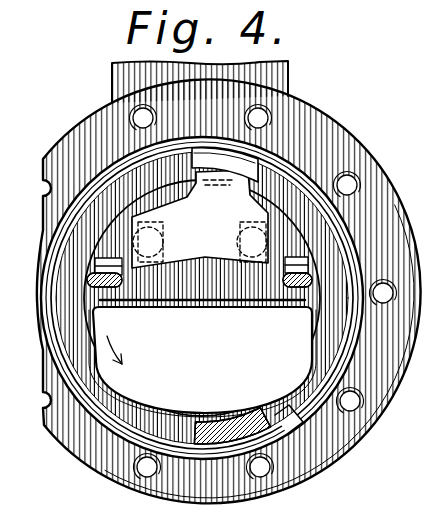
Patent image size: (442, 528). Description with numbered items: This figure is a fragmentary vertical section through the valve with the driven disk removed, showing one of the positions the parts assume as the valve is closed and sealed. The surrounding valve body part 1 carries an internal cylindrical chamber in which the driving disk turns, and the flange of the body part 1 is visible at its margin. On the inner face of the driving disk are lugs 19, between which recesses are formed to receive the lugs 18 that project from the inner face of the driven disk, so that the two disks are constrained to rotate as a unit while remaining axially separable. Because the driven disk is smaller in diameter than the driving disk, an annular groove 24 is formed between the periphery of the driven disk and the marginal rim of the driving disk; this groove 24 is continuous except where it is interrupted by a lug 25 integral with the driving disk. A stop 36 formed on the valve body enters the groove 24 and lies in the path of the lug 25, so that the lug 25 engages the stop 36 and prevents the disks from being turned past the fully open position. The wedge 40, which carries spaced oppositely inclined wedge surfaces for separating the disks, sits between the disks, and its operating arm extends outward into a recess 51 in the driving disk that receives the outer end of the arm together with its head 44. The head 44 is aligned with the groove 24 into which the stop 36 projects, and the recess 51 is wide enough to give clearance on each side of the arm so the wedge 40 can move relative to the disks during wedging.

The valve body part 1 is at (390, 404).
The lugs 18 is at (104, 288).
The lugs 19 is at (120, 270).
The annular groove 24 is at (333, 247).
The lug 25 is at (283, 425).
The stop 36 is at (223, 424).
The wedge 40 is at (200, 219).
The head 44 is at (226, 170).
The recess 51 is at (263, 160).